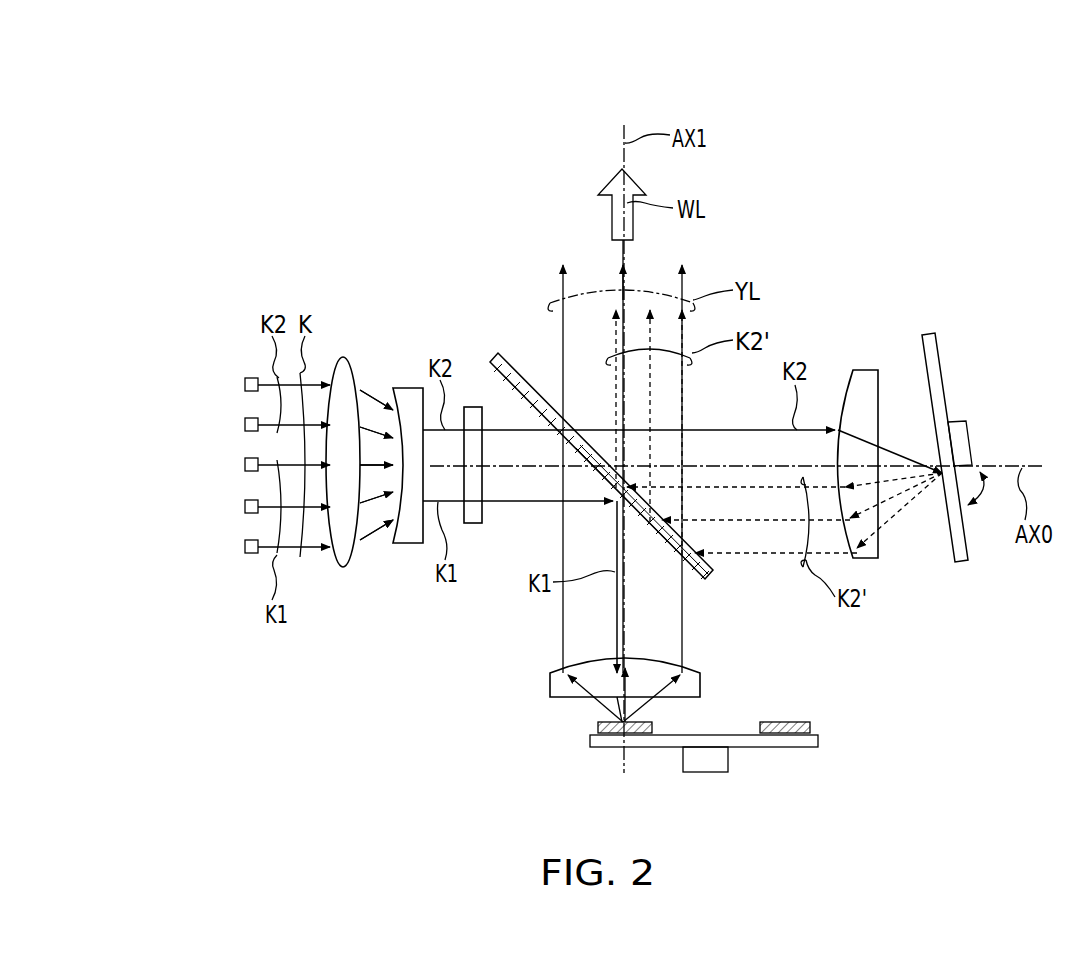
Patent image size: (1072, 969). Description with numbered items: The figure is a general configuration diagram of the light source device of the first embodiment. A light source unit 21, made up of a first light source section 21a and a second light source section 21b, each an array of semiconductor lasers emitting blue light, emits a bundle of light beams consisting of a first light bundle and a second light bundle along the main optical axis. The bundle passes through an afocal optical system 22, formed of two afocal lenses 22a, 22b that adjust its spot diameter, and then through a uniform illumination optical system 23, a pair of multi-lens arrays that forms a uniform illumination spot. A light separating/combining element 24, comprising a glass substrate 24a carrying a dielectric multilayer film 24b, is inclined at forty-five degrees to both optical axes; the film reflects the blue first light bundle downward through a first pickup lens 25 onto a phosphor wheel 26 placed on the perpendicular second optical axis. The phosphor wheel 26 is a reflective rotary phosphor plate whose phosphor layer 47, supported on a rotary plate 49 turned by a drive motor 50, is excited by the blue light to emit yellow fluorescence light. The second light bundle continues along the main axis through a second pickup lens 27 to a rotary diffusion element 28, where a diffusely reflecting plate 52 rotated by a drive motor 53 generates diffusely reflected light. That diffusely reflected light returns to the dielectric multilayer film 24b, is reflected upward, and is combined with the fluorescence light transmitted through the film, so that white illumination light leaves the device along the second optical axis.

The light source unit 21 is at (240, 300).
The first light source section 21a is at (205, 488).
The second light source section 21b is at (220, 383).
The afocal optical system 22 is at (425, 660).
The afocal lens 22a is at (347, 567).
The afocal lens 22b is at (412, 545).
The uniform illumination optical system 23 is at (477, 523).
The light separating/combining element 24 is at (720, 580).
The glass substrate 24a is at (713, 563).
The dielectric multilayer film 24b is at (702, 575).
The first pickup lens 25 is at (558, 678).
The phosphor wheel 26 is at (857, 728).
The phosphor layer 47 is at (598, 727).
The rotary plate 49 is at (795, 742).
The drive motor 50 is at (718, 760).
The second pickup lens 27 is at (860, 385).
The rotary diffusion element 28 is at (937, 323).
The diffusely reflecting plate 52 is at (938, 338).
The drive motor 53 is at (970, 425).